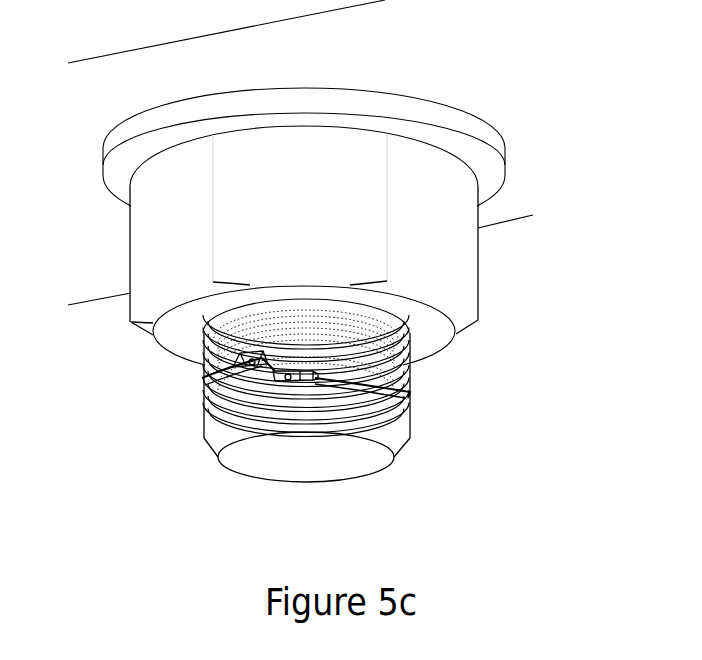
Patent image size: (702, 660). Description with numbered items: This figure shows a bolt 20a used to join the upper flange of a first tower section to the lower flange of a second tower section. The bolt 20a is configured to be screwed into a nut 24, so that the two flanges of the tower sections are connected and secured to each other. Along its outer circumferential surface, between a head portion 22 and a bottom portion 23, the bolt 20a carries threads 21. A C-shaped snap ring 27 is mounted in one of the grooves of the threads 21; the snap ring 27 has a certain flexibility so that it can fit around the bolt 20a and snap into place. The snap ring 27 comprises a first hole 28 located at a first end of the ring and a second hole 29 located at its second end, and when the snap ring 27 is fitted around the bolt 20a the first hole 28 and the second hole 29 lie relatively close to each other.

The bolt 20a is at (205, 448).
The threads 21 is at (280, 377).
The head portion 22 is at (235, 320).
The bottom portion 23 is at (311, 460).
The nut 24 is at (440, 243).
The C-shaped snap ring 27 is at (410, 393).
The first hole 28 is at (205, 393).
The second hole 29 is at (400, 431).